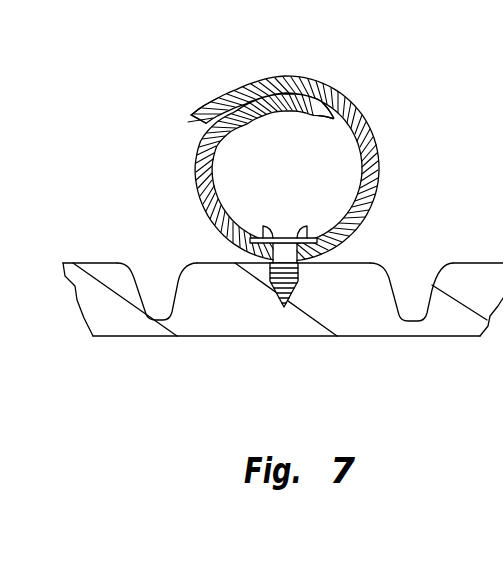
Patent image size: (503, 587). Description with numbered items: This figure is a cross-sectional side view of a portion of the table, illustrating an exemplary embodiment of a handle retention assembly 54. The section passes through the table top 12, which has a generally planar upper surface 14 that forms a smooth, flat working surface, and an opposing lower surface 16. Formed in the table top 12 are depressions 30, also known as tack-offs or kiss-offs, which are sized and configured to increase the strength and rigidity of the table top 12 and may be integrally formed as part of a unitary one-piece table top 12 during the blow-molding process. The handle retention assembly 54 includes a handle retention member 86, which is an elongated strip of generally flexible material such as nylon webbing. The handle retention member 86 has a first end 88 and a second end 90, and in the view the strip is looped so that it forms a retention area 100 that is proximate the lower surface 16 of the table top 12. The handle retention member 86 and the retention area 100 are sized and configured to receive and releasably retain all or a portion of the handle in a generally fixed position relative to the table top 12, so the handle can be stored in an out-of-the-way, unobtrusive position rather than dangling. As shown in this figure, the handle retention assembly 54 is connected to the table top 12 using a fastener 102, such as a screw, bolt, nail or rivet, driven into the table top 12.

The table top 12 is at (65, 290).
The upper surface 14 is at (255, 337).
The lower surface 16 is at (361, 262).
The depression 30 is at (155, 288).
The handle retention assembly 54 is at (150, 155).
The handle retention member 86 is at (369, 122).
The first end 88 is at (327, 117).
The second end 90 is at (215, 97).
The retention area 100 is at (345, 178).
The fastener 102 is at (263, 226).